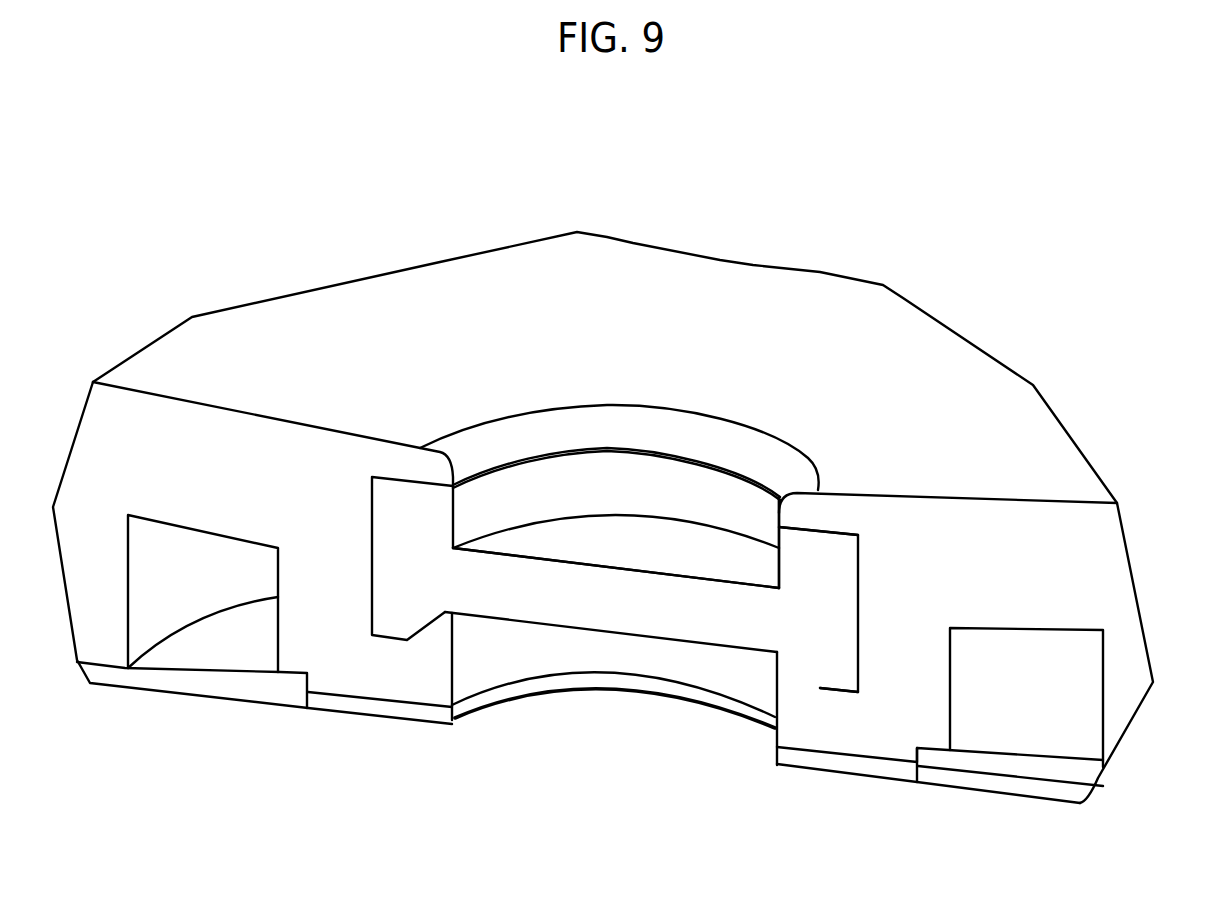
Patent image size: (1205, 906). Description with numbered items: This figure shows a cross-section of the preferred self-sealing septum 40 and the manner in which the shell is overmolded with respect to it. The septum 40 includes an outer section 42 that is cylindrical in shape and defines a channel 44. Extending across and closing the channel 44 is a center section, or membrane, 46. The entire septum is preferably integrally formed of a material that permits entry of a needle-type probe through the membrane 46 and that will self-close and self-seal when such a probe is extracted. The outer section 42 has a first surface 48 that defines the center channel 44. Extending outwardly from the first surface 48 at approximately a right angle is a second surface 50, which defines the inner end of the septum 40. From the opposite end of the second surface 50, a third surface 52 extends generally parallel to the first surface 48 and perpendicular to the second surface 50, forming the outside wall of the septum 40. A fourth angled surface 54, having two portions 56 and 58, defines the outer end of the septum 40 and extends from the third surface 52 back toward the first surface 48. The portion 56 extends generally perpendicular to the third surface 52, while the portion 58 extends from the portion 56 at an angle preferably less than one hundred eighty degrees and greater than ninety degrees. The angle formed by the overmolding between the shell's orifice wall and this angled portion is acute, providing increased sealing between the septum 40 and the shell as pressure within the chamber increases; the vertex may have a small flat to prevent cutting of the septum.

The septum 40 is at (663, 610).
The outer section 42 is at (740, 500).
The channel 44 is at (652, 479).
The center section 46 is at (738, 567).
The first surface 48 is at (779, 548).
The second surface 50 is at (827, 532).
The third surface 52 is at (858, 612).
The fourth angled surface 54 is at (861, 708).
The portion of fourth surface 56 is at (388, 637).
The portion of fourth surface 58 is at (422, 633).